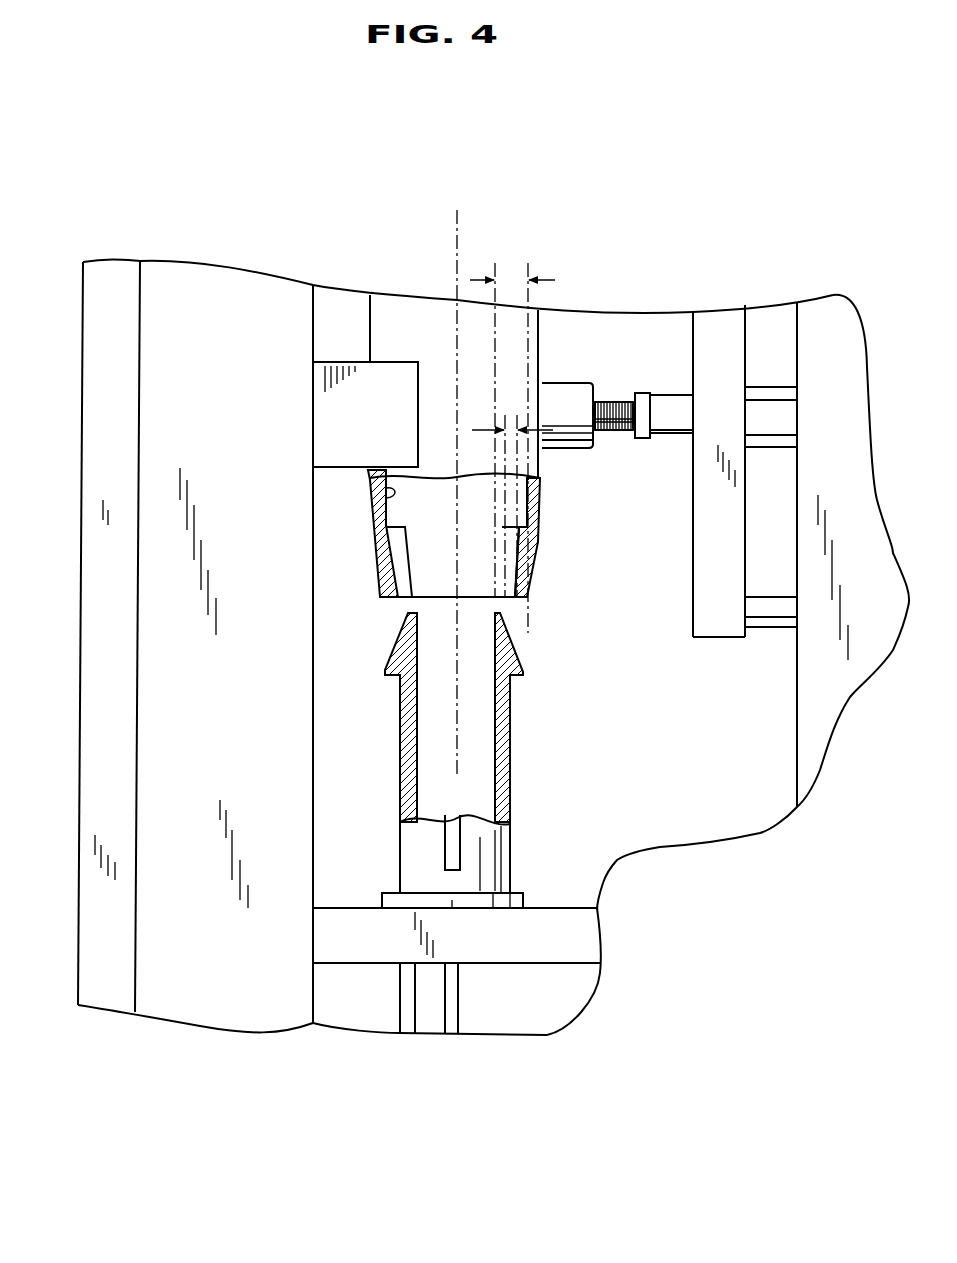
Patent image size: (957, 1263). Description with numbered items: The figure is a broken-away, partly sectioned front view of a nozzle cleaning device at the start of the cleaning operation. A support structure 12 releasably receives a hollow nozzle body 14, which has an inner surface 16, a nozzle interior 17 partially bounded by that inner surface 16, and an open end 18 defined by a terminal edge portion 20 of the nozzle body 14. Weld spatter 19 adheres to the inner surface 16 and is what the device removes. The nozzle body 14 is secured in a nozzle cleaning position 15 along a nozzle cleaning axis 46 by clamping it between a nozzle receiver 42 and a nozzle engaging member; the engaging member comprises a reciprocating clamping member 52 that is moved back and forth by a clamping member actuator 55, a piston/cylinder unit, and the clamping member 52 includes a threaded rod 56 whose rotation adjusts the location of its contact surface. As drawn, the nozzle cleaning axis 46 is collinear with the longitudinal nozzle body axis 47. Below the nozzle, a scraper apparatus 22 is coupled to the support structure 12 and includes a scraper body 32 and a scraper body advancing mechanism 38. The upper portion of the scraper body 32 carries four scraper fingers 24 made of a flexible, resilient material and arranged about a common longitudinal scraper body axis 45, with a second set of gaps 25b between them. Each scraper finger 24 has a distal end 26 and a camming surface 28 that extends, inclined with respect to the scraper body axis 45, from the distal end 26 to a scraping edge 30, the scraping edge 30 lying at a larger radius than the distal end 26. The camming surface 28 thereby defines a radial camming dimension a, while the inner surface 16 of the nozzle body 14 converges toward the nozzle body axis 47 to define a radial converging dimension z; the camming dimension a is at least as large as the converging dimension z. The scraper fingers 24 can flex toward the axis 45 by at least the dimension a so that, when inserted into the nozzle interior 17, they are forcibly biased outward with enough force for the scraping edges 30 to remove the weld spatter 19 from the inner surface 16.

The support structure 12 is at (78, 968).
The hollow nozzle body 14 is at (369, 333).
The nozzle cleaning position 15 is at (562, 370).
The inner surface 16 is at (397, 490).
The nozzle interior 17 is at (403, 512).
The open end 18 is at (418, 598).
The weld spatter 19 is at (407, 565).
The terminal edge portion 20 is at (387, 602).
The scraper apparatus 22 is at (566, 856).
The scraper fingers 24 is at (510, 760).
The second set of gaps 25b is at (452, 855).
The distal end 26 is at (497, 612).
The camming surface 28 is at (513, 642).
The scraping edge 30 is at (517, 675).
The scraper body 32 is at (512, 872).
The scraper body advancing mechanism 38 is at (537, 1012).
The nozzle receiver 42 is at (382, 433).
The longitudinal scraper body axis 45 is at (457, 735).
The nozzle cleaning axis 46 is at (455, 325).
The longitudinal nozzle body axis 47 is at (455, 242).
The reciprocating clamping member 52 is at (595, 445).
The clamping member actuator 55 is at (768, 317).
The threaded rod 56 is at (610, 400).
The radial camming dimension a is at (513, 277).
The radial converging dimension z is at (513, 423).